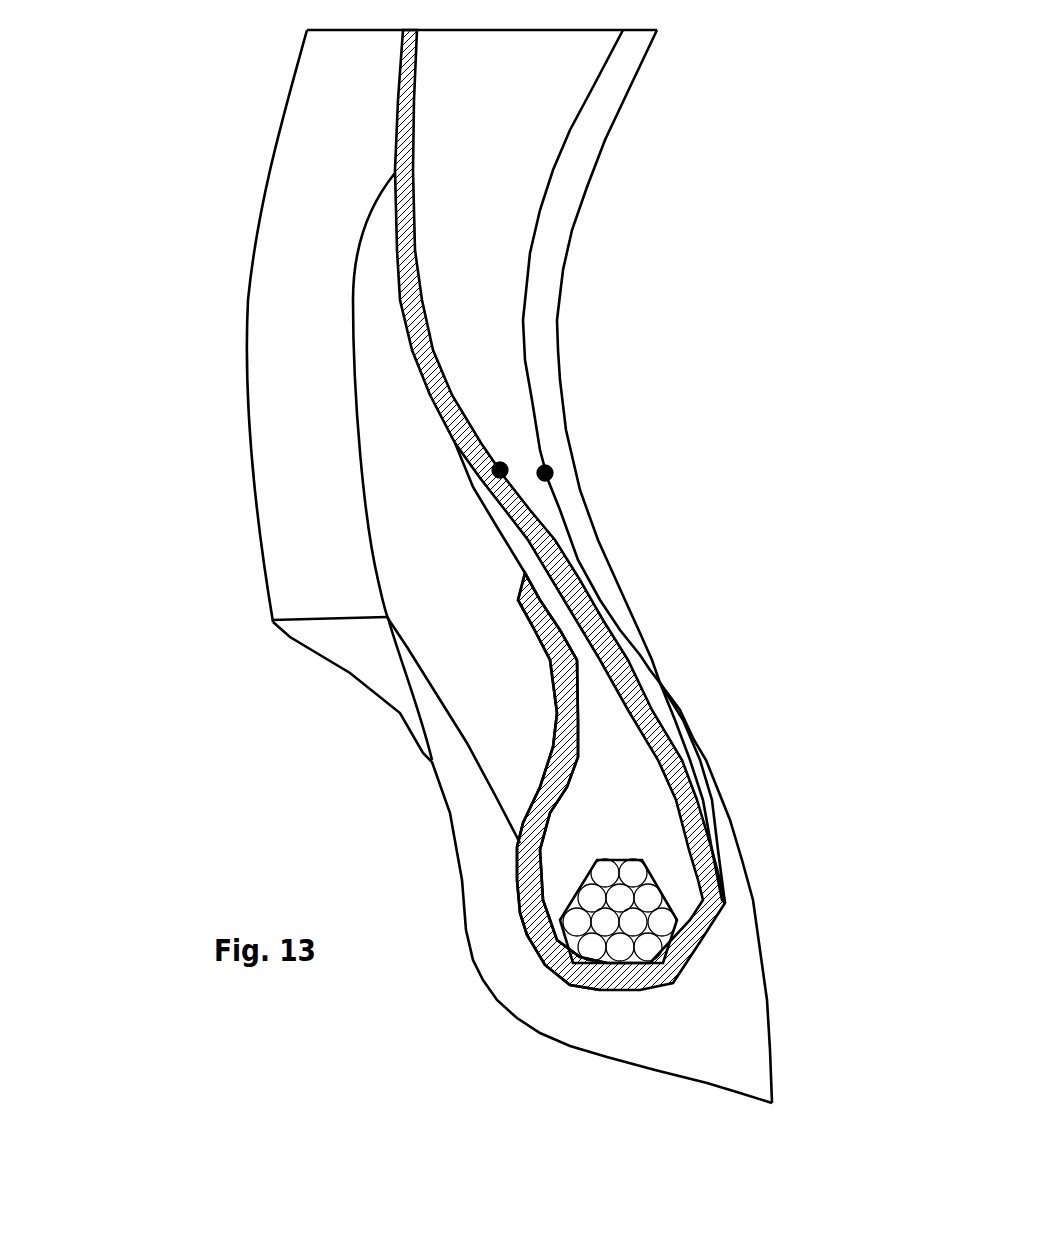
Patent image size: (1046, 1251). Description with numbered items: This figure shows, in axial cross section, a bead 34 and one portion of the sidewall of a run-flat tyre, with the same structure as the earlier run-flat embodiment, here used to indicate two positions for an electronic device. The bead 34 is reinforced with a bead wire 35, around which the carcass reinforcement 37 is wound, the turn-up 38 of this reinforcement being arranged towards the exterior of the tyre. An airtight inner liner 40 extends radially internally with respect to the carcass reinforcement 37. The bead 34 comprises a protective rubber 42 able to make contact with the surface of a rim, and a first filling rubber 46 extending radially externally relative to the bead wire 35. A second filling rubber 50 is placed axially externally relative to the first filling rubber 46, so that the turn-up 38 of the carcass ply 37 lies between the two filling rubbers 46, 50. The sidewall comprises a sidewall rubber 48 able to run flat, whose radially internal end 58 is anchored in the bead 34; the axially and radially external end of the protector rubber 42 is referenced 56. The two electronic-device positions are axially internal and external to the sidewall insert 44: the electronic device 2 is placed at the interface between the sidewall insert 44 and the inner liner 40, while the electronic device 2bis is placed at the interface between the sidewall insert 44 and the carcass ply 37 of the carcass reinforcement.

The bead 34 is at (192, 522).
The sidewall rubber 48 is at (265, 452).
The second filling rubber 50 is at (405, 368).
The axially and radially external end of the protector rubber 56 is at (272, 620).
The radially internal end of the sidewall rubber 58 is at (432, 760).
The inner liner 40 is at (613, 573).
The sidewall insert 44 is at (503, 413).
The protective rubber 42 is at (722, 1007).
The carcass reinforcement 37 is at (645, 691).
The turn-up 38 is at (570, 745).
The first filling rubber 46 is at (637, 812).
The bead wire 35 is at (637, 928).
The electronic device 2bis is at (507, 460).
The electronic device 2 is at (552, 470).